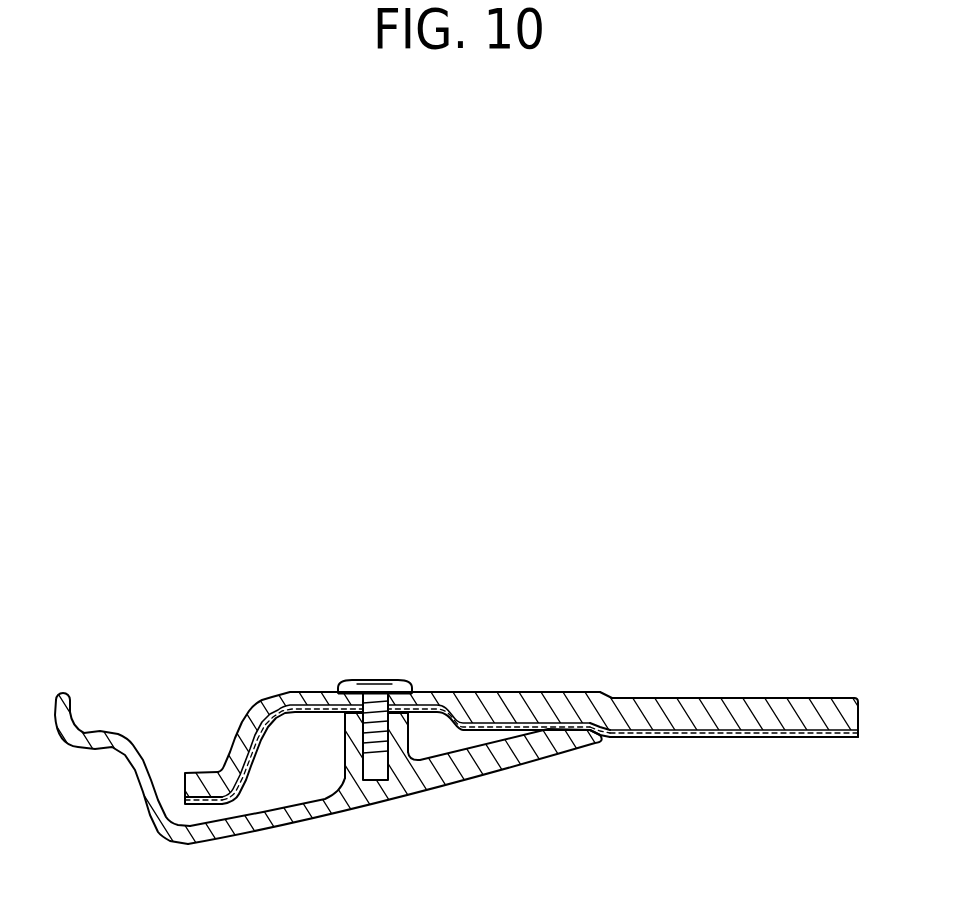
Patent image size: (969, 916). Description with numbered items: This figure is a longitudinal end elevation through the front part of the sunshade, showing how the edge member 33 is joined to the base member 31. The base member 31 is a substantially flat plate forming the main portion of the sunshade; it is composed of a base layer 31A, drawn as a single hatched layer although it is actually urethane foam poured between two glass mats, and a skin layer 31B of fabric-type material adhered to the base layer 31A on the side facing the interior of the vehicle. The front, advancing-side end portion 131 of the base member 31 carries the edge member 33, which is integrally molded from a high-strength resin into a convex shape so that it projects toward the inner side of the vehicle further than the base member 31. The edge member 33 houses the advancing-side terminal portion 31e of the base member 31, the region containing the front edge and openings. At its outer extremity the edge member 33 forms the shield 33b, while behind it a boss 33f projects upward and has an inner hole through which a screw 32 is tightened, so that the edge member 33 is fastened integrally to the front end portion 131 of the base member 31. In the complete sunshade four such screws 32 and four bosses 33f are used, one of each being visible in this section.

The base member 31 is at (852, 718).
The base layer 31A is at (735, 717).
The skin layer 31B is at (725, 739).
The advancing-side terminal portion 31e is at (200, 782).
The advancing-side end portion 131 is at (418, 690).
The screw 32 is at (375, 678).
The edge member 33 is at (273, 822).
The shield 33b is at (133, 781).
The boss 33f is at (352, 750).